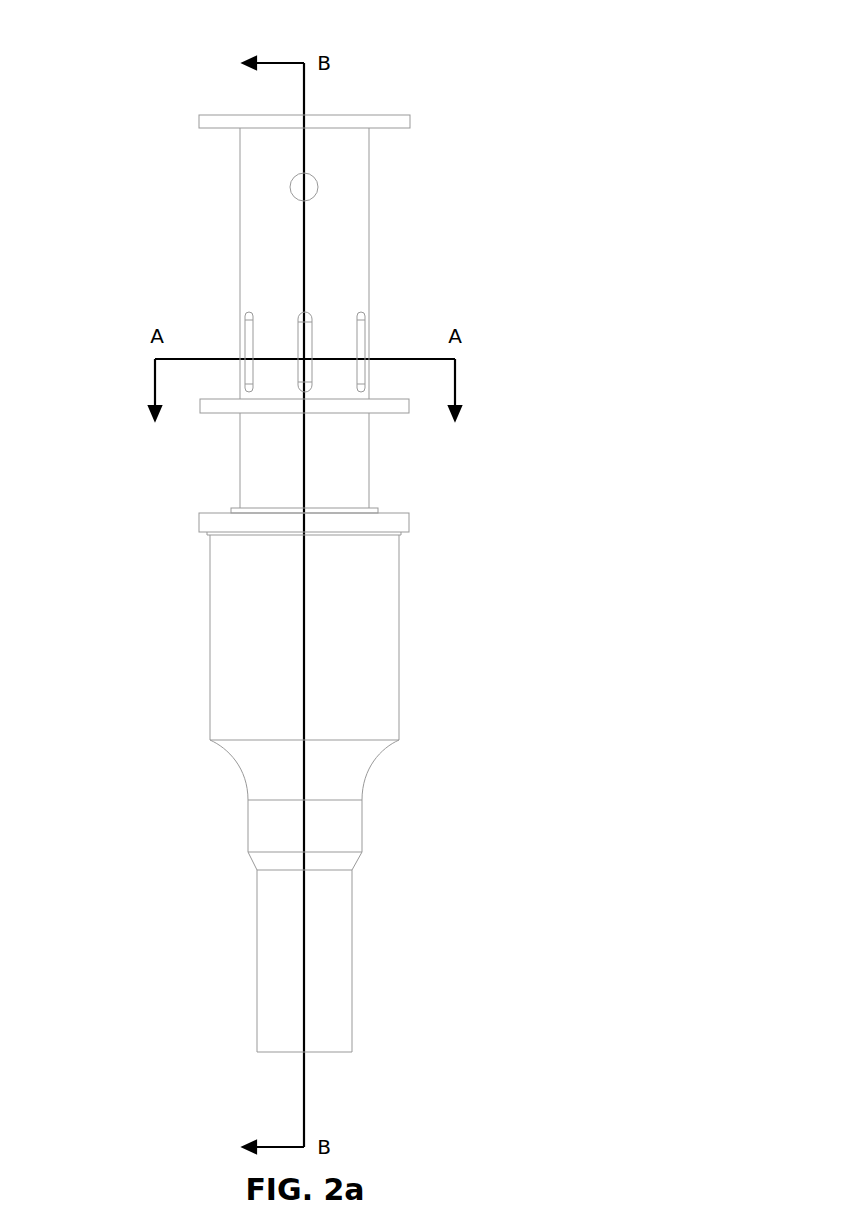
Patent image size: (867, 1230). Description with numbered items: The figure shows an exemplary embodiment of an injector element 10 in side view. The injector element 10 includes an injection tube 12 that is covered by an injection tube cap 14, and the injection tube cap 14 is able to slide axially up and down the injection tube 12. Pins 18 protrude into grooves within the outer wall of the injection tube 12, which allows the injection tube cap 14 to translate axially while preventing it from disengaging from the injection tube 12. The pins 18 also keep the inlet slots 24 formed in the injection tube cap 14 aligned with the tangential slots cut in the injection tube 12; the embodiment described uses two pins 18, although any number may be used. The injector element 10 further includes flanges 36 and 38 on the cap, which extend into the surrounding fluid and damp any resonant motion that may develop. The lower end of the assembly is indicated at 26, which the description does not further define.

The injector element 10 is at (155, 525).
The injection tube 12 is at (210, 692).
The injection tube cap 14 is at (369, 243).
The pins 18 is at (290, 182).
The inlet slots 24 is at (310, 350).
The shaft end 26 is at (307, 1052).
The flange 36 is at (338, 413).
The flange 38 is at (358, 115).